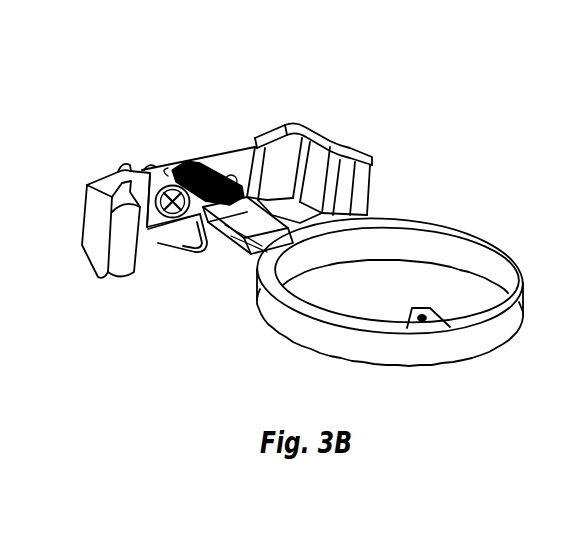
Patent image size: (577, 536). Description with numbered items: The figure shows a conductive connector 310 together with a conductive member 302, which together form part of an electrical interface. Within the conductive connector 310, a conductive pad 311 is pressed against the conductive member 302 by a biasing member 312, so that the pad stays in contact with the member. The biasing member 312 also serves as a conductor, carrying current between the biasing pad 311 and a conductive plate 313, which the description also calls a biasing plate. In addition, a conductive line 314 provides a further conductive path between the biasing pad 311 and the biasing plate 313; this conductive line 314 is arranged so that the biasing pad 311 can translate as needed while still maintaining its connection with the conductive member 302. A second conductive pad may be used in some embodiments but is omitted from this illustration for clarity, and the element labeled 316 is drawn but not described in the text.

The conductive connector 310 is at (131, 76).
The conductive pad 311 is at (243, 258).
The biasing member 312 is at (205, 165).
The conductive plate 313 is at (193, 162).
The conductive line 314 is at (183, 250).
The bracket clip 316 is at (328, 128).
The conductive member 302 is at (437, 360).